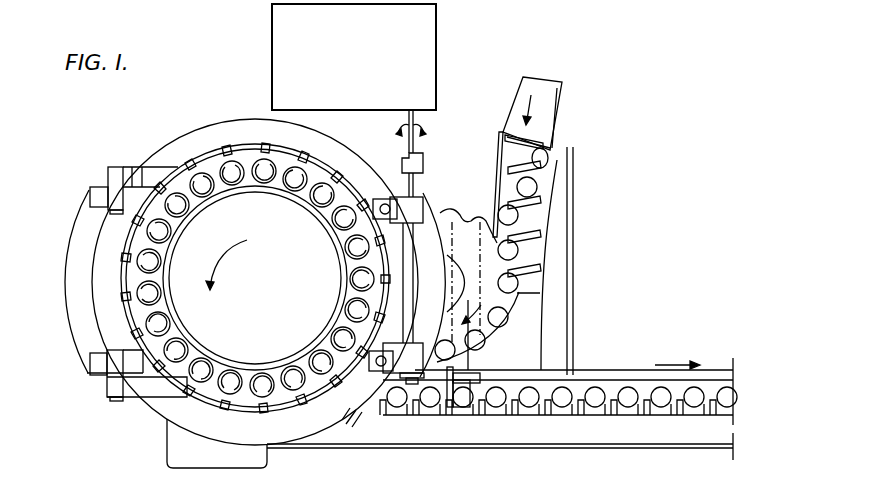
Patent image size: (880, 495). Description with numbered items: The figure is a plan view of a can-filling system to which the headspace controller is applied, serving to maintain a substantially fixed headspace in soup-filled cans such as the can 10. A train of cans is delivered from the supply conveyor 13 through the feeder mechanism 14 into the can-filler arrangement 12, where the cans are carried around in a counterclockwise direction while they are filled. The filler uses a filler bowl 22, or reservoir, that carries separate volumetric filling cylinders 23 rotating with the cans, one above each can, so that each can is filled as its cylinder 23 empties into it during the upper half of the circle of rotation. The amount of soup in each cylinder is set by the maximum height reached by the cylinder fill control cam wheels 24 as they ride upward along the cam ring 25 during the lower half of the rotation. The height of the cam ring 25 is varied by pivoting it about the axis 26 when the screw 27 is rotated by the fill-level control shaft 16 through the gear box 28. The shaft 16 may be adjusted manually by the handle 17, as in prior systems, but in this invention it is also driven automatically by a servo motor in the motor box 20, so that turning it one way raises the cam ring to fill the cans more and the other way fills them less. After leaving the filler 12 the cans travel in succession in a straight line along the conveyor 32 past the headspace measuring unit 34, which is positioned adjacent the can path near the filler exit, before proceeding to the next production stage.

The can 10 is at (630, 388).
The can-filler arrangement 12 is at (80, 198).
The supply conveyor 13 is at (492, 148).
The feeder mechanism 14 is at (461, 219).
The fill-level control shaft 16 is at (410, 307).
The handle 17 is at (412, 385).
The motor box 20 is at (437, 62).
The filler bowl 22 is at (207, 352).
The volumetric filling cylinder 23 is at (334, 227).
The cylinder fill control cam wheel 24 is at (136, 334).
The cam ring 25 is at (243, 412).
The axis 26 is at (113, 167).
The screw 27 is at (385, 200).
The gear box 28 is at (416, 218).
The conveyor 32 is at (566, 441).
The headspace measuring unit 34 is at (465, 407).